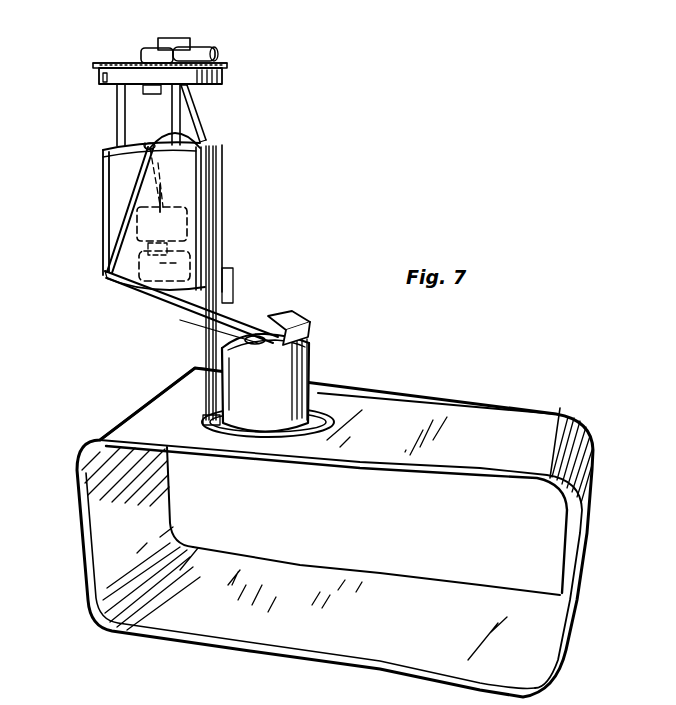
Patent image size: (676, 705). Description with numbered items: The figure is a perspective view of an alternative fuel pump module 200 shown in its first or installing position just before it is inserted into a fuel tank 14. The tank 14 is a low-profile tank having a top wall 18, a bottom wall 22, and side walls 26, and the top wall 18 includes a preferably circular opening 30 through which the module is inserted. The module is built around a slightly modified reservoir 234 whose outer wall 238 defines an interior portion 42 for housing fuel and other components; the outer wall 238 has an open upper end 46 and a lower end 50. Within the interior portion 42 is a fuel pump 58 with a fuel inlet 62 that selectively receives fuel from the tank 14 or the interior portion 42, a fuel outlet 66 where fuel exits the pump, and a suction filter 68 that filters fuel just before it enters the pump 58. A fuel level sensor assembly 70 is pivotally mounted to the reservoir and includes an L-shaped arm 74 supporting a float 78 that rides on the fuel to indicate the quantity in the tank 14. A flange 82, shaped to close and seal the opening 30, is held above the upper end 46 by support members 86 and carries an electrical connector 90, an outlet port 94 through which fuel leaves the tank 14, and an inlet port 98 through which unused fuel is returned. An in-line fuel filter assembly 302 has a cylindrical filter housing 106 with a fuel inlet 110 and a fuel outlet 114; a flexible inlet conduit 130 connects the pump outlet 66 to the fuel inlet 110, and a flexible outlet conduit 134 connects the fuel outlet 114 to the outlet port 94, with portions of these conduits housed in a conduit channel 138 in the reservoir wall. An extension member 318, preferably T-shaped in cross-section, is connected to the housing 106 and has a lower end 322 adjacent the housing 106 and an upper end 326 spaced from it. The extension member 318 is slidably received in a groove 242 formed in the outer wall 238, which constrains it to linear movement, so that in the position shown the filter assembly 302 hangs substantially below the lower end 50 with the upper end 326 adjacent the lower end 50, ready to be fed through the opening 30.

The fuel tank 14 is at (558, 416).
The top wall 18 is at (341, 528).
The bottom wall 22 is at (370, 603).
The side walls 26 is at (600, 518).
The opening 30 is at (336, 405).
The interior portion 42 is at (141, 126).
The upper end 46 is at (157, 140).
The lower end 50 is at (172, 300).
The fuel pump 58 is at (112, 250).
The fuel inlet 62 is at (190, 232).
The fuel outlet 66 is at (112, 204).
The suction filter 68 is at (112, 275).
The fuel level sensor assembly 70 is at (178, 311).
The L-shaped arm 74 is at (138, 171).
The float 78 is at (295, 316).
The flange 82 is at (120, 62).
The support members 86 is at (115, 96).
The electrical connector 90 is at (155, 58).
The outlet port 94 is at (208, 50).
The inlet port 98 is at (184, 37).
The filter housing 106 is at (265, 383).
The fuel inlet 110 is at (212, 365).
The fuel outlet 114 is at (246, 320).
The flexible inlet conduit 130 is at (186, 130).
The flexible outlet conduit 134 is at (196, 116).
The conduit channel 138 is at (204, 140).
The fuel pump module 200 is at (400, 119).
The reservoir 234 is at (108, 286).
The outer wall 238 is at (110, 226).
The groove 242 is at (218, 186).
The in-line fuel filter assembly 302 is at (317, 361).
The extension member 318 is at (200, 368).
The lower end 322 is at (203, 420).
The upper end 326 is at (234, 276).